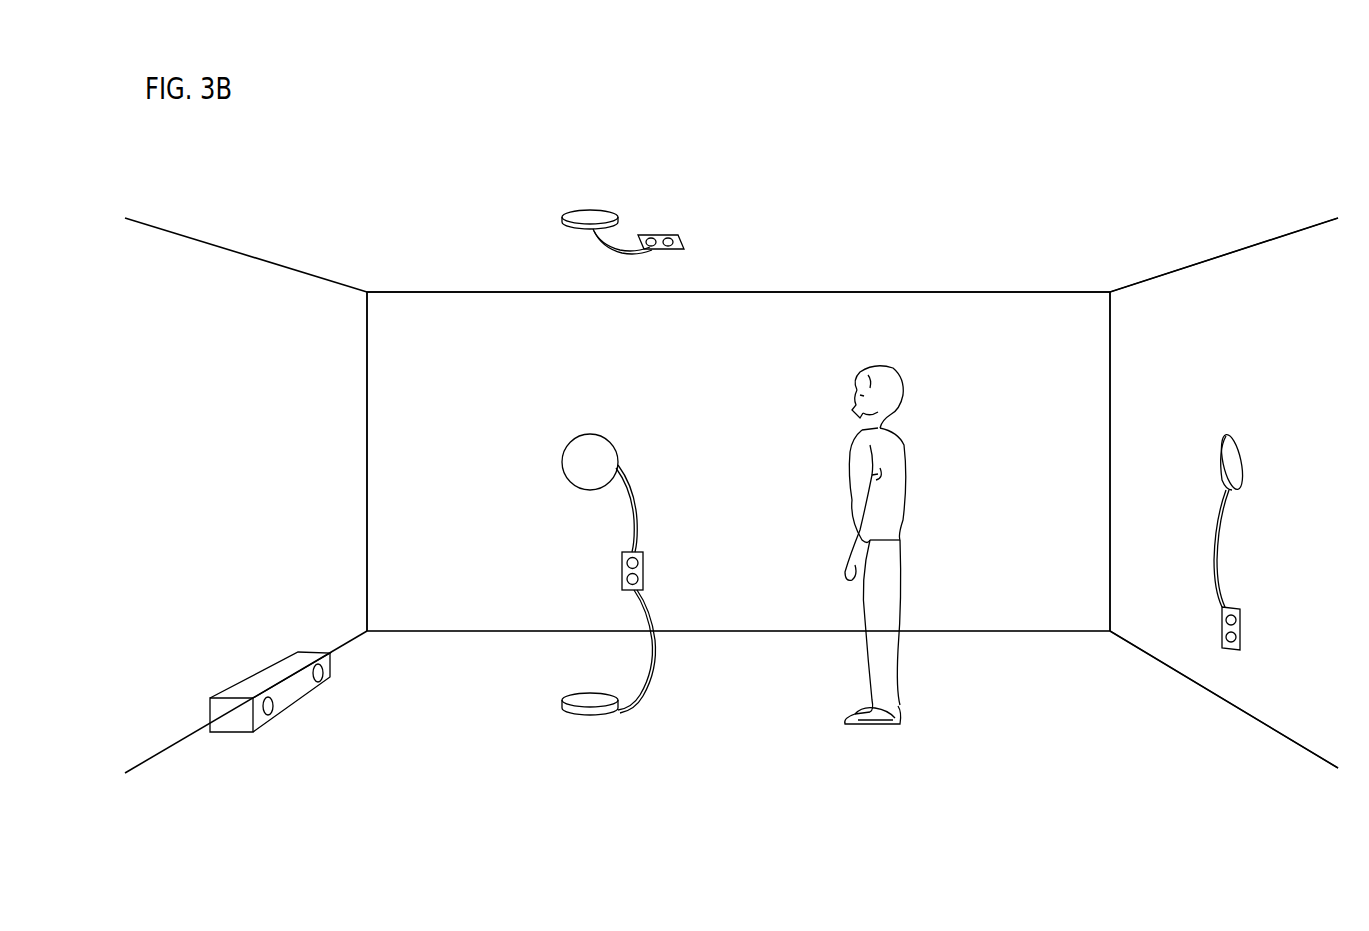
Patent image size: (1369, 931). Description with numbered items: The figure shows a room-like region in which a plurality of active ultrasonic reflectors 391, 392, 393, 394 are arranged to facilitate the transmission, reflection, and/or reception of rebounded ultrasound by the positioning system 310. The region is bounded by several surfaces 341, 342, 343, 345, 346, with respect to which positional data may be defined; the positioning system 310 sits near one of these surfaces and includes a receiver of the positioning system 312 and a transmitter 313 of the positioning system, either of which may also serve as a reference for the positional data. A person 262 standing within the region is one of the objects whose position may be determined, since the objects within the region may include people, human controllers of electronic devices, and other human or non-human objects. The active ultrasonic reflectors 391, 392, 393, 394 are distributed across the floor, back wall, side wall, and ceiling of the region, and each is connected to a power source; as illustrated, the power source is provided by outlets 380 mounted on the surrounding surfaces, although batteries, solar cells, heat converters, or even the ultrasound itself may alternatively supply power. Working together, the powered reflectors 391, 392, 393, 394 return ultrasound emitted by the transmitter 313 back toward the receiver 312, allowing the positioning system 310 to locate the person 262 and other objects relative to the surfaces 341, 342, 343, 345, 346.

The user 262 is at (895, 373).
The positioning system 310 is at (258, 678).
The receiver of the positioning system 312 is at (318, 665).
The transmitter of the positioning system 313 is at (258, 698).
The surface 341 is at (1113, 673).
The surface 342 is at (1091, 339).
The surface 343 is at (1155, 469).
The surface 345 is at (1115, 275).
The surface 346 is at (342, 565).
The outlet 380 is at (664, 235).
The active ultrasonic reflector 391 is at (597, 692).
The active ultrasonic reflector 392 is at (598, 433).
The active ultrasonic reflector 393 is at (1238, 436).
The active ultrasonic reflector 394 is at (611, 208).